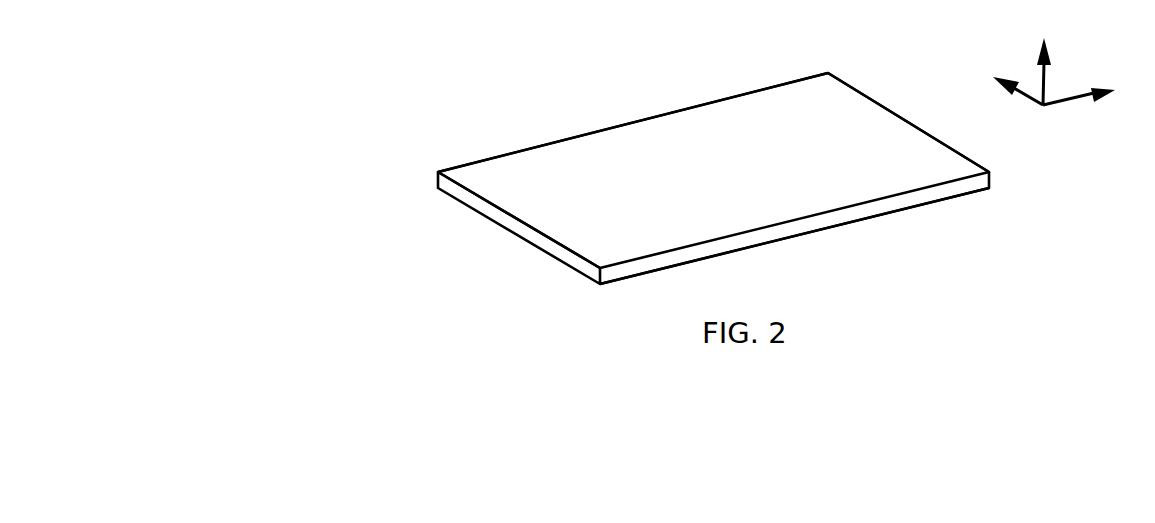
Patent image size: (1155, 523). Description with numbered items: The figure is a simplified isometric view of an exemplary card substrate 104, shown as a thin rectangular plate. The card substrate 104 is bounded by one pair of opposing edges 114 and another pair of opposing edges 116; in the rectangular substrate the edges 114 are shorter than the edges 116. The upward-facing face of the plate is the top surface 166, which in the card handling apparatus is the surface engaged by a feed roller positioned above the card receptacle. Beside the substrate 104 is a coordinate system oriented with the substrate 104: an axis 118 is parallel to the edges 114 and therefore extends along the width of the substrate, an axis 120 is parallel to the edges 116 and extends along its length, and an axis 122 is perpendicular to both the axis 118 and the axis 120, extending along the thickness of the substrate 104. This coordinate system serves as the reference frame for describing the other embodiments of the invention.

The card substrate 104 is at (440, 97).
The opposing edges 114 is at (890, 112).
The opposing edges 116 is at (689, 106).
The top surface 166 is at (545, 162).
The axis 118 is at (1023, 95).
The axis 120 is at (1070, 105).
The axis 122 is at (1046, 72).